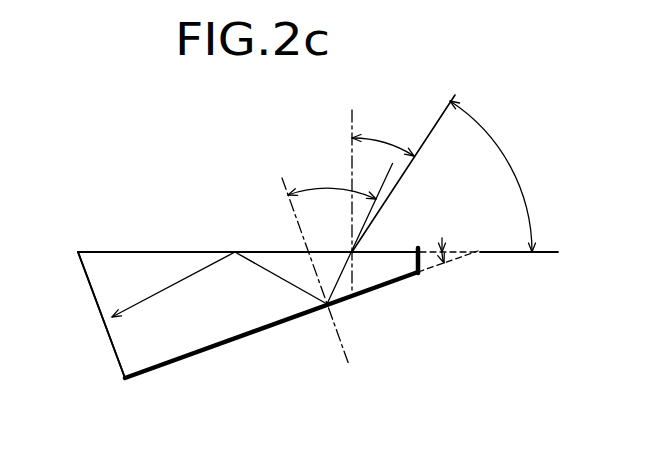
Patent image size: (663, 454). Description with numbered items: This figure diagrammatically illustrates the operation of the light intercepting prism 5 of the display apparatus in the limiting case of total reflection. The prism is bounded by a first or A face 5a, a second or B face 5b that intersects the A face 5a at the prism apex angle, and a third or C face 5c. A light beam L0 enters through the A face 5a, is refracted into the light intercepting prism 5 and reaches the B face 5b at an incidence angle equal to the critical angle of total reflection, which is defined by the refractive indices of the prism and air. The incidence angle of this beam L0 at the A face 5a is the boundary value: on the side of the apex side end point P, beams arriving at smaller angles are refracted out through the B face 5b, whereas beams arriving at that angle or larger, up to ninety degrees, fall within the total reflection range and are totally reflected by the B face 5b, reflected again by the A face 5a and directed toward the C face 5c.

The light intercepting prism 5 is at (198, 257).
The A face 5a is at (132, 252).
The B face 5b is at (193, 355).
The C face 5c is at (110, 340).
The apex side end point P is at (418, 250).
The light beam L0 is at (420, 148).